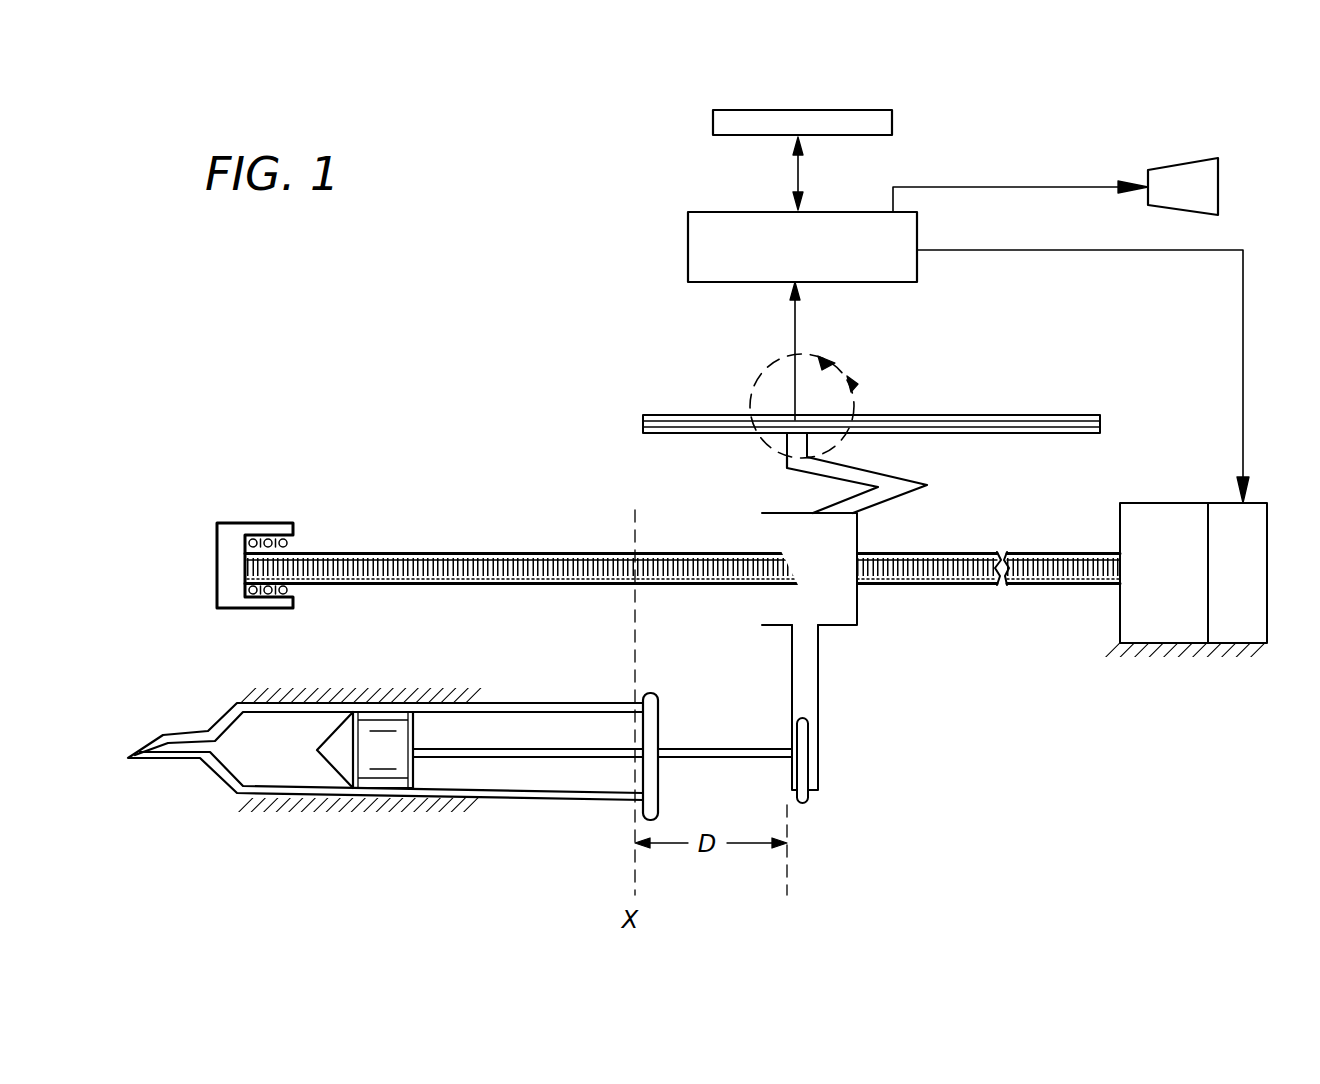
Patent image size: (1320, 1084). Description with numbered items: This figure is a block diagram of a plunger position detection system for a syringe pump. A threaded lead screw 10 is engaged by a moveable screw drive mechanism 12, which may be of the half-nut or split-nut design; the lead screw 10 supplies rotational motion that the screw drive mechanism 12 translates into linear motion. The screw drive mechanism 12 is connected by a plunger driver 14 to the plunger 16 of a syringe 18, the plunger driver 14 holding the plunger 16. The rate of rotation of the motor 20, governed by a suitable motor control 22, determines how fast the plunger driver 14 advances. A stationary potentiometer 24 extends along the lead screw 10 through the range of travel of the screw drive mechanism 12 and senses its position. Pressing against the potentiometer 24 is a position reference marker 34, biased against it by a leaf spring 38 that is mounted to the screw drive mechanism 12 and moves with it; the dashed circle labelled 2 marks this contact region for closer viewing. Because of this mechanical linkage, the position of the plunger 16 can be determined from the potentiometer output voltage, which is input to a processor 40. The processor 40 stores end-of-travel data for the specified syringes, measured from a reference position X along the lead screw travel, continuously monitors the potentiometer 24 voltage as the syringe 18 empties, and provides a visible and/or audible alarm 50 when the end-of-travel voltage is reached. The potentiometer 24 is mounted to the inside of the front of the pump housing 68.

The lead screw 10 is at (370, 552).
The screw drive mechanism 12 is at (857, 612).
The plunger driver 14 is at (808, 672).
The plunger 16 is at (808, 803).
The syringe 18 is at (497, 800).
The motor 20 is at (1152, 625).
The motor control 22 is at (1238, 620).
The potentiometer 24 is at (725, 435).
The position reference marker 34 is at (797, 422).
The leaf spring 38 is at (905, 481).
The processor 40 is at (688, 243).
The alarm 50 is at (1155, 164).
The pump housing 68 is at (893, 117).
The detail view circle 2 is at (807, 399).